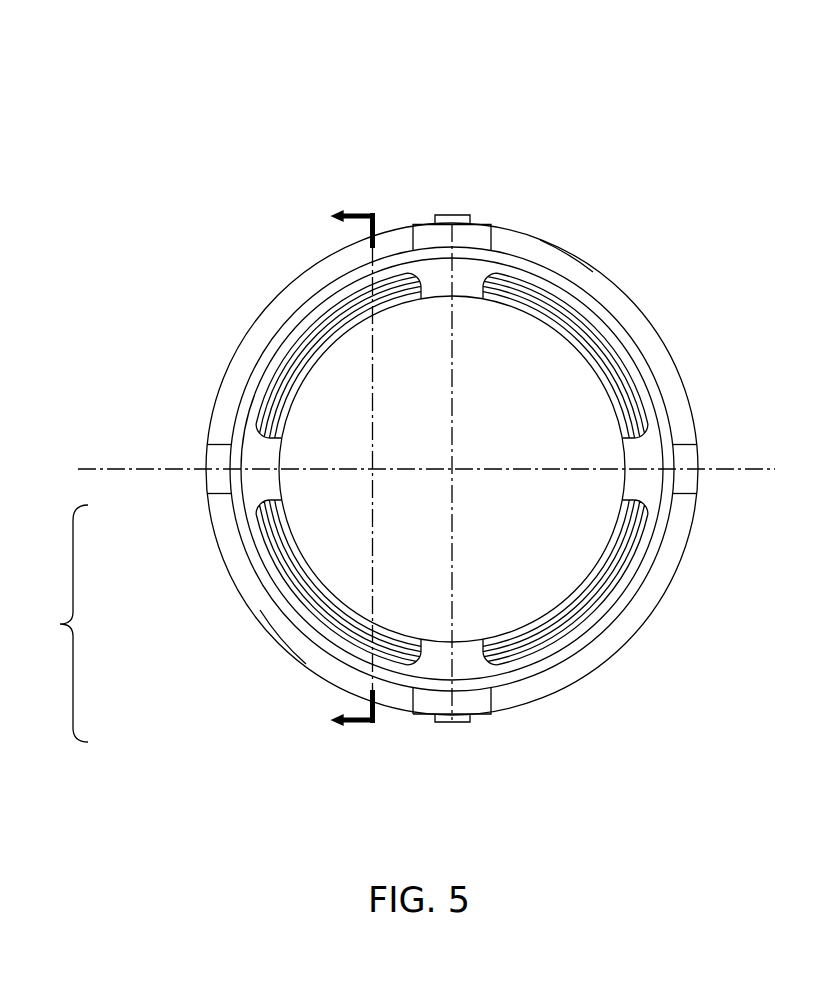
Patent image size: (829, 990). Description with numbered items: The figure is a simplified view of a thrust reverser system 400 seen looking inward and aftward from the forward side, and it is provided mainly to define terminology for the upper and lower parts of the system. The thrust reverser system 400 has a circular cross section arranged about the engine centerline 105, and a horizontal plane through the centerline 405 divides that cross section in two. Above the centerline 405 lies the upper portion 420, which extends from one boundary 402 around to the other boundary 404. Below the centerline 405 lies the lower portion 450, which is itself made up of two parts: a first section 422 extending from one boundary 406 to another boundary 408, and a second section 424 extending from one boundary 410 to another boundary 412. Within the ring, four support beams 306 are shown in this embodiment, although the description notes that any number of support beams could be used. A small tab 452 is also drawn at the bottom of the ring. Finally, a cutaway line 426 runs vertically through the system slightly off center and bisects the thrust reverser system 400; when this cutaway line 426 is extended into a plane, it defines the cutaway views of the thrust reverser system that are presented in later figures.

The thrust reverser system 400 is at (308, 129).
The engine centerline 105 is at (452, 469).
The support beams 306 is at (468, 268).
The upper portion boundary 402 is at (206, 444).
The upper portion boundary 404 is at (698, 445).
The centerline 405 is at (95, 468).
The first section boundary 406 is at (698, 493).
The first section boundary 408 is at (490, 714).
The second section boundary 410 is at (413, 716).
The second section boundary 412 is at (206, 493).
The upper portion 420 is at (592, 276).
The first section 422 is at (649, 620).
The second section 424 is at (306, 664).
The cutaway line 426 is at (372, 211).
The lower portion 450 is at (49, 623).
The tab 452 is at (441, 714).